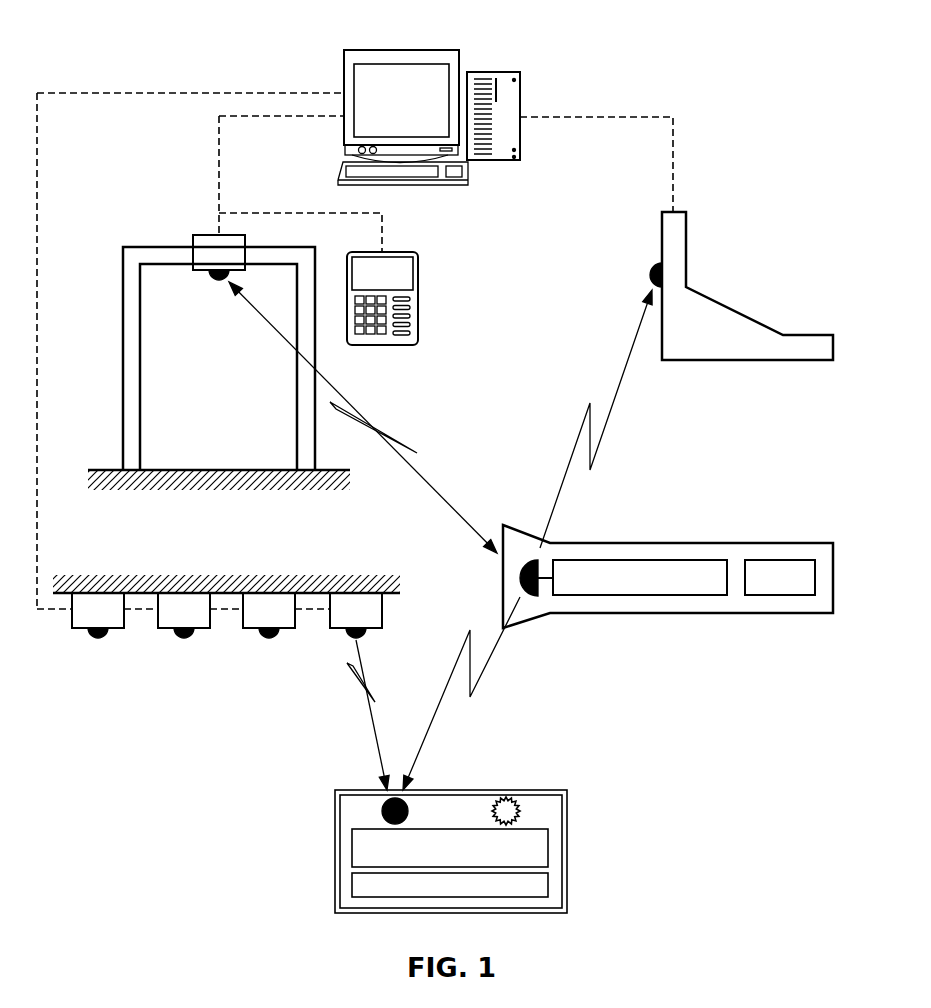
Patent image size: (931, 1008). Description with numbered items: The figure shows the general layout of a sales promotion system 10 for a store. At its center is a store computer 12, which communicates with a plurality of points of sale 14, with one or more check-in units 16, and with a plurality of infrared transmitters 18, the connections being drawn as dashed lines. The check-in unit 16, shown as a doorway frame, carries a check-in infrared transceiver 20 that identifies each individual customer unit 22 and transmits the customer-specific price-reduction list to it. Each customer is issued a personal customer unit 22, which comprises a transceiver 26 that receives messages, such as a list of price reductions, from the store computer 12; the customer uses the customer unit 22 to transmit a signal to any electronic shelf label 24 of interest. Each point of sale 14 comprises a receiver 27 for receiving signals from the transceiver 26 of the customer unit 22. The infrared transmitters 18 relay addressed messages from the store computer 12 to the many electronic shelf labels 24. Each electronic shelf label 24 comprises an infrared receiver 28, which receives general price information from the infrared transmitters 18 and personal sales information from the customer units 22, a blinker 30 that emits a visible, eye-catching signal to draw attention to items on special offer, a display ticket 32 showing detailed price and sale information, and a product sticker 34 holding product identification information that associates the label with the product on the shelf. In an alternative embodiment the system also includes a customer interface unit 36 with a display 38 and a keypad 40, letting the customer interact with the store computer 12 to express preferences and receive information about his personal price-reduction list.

The sales promotion system 10 is at (827, 54).
The store computer 12 is at (392, 50).
The point of sale 14 is at (720, 297).
The check-in unit 16 is at (98, 228).
The infrared transmitter 18 is at (328, 622).
The check-in infrared transceiver 20 is at (192, 240).
The customer unit 22 is at (630, 543).
The electronic shelf label 24 is at (418, 844).
The transceiver 26 is at (530, 593).
The receiver 27 is at (648, 270).
The infrared receiver 28 is at (383, 811).
The blinker 30 is at (505, 797).
The display ticket 32 is at (352, 849).
The product sticker 34 is at (352, 888).
The customer interface unit 36 is at (413, 300).
The display 38 is at (395, 263).
The keypad 40 is at (383, 330).